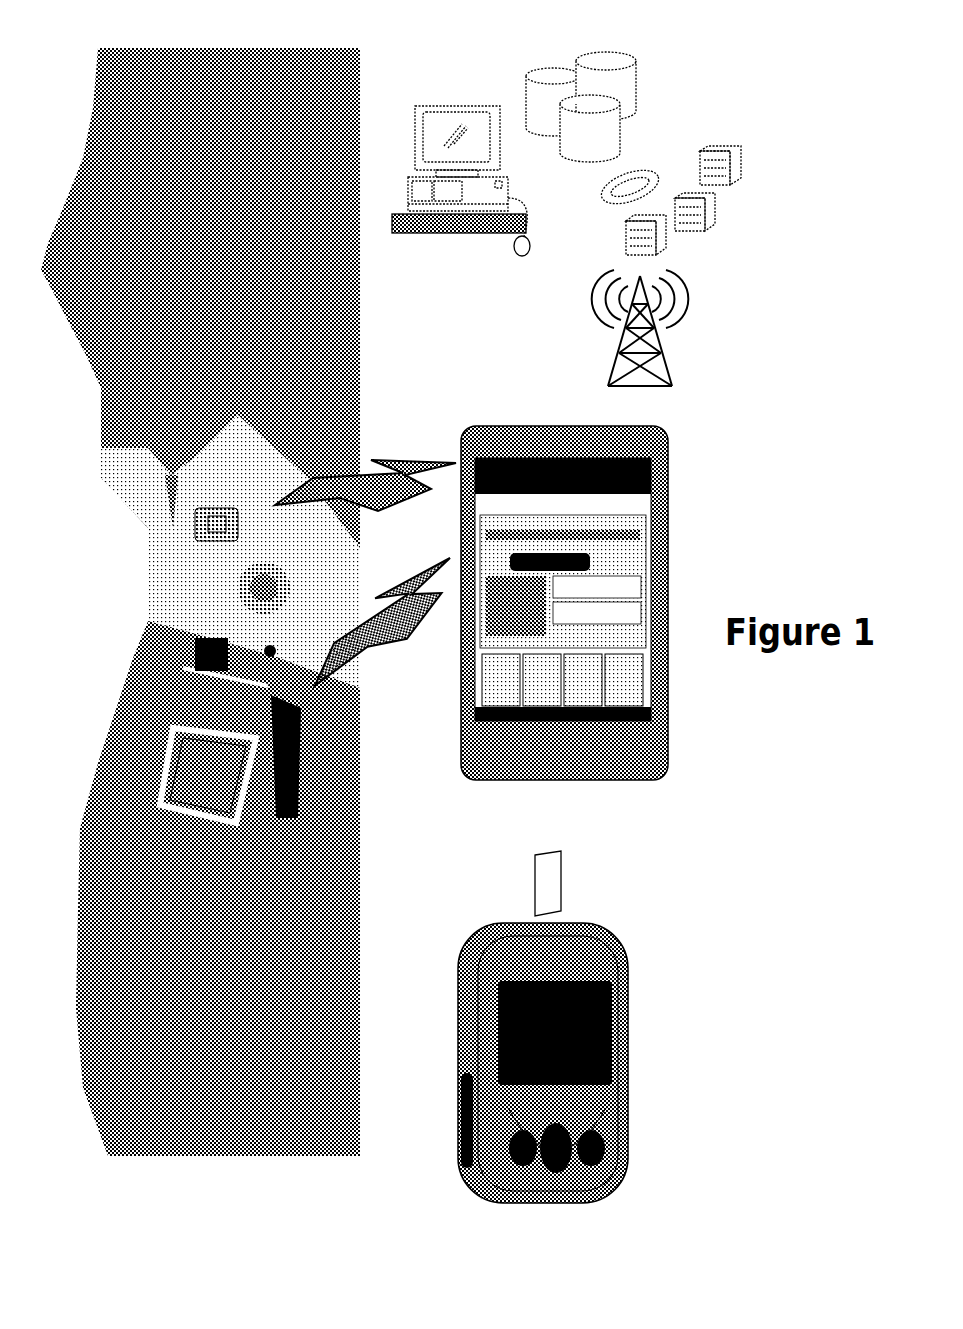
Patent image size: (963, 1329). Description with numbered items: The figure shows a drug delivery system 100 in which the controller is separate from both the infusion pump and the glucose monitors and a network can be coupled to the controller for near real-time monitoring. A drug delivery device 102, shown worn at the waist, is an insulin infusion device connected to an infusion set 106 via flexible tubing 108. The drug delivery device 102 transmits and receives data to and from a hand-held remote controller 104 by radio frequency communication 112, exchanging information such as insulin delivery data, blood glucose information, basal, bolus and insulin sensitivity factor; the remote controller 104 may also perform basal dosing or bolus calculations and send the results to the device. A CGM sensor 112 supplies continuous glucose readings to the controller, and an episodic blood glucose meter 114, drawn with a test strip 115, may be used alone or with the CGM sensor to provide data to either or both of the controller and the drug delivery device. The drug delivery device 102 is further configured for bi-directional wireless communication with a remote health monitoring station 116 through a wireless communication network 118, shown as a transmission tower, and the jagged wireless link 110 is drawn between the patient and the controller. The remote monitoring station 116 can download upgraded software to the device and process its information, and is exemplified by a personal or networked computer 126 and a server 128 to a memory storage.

The drug delivery system 100 is at (447, 384).
The drug delivery device 102 is at (173, 725).
The remote controller 104 is at (660, 547).
The infusion set 106 is at (247, 580).
The flexible tubing 108 is at (263, 640).
The wireless communication link 110 is at (365, 485).
The radio frequency communication 112 is at (187, 520).
The episodic blood glucose meter 114 is at (615, 968).
The test strip 115 is at (553, 866).
The remote health monitoring station 116 is at (680, 100).
The wireless communication network 118 is at (654, 328).
The personal or networked computer 126 is at (443, 94).
The server 128 is at (550, 47).